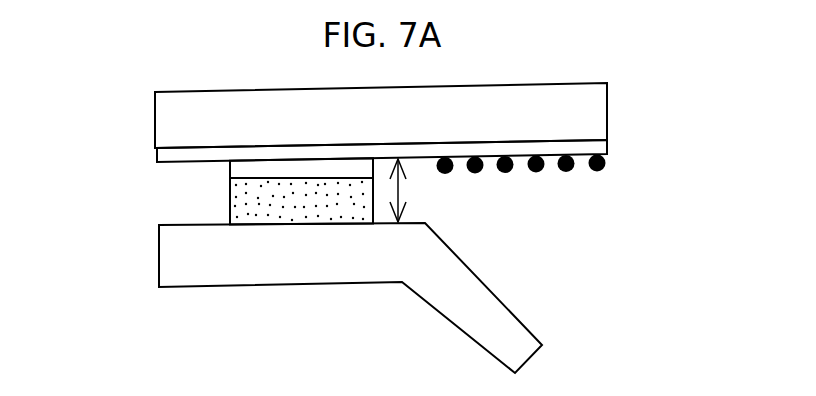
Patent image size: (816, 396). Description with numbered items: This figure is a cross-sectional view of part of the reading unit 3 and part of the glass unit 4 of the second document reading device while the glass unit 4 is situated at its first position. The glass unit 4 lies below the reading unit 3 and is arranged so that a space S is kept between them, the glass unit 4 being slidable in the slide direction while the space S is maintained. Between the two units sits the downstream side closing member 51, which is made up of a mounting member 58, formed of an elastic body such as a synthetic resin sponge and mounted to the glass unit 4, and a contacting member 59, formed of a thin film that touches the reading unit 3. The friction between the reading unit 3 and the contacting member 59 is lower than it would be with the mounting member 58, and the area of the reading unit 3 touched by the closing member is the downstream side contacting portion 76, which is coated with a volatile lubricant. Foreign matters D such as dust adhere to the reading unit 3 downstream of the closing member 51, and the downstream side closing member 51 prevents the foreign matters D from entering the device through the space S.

The reading unit 3 is at (596, 113).
The downstream side contacting portion 76 is at (595, 145).
The downstream side closing member 51 is at (209, 213).
The contacting member 59 is at (230, 172).
The mounting member 58 is at (230, 200).
The glass unit 4 is at (328, 262).
The space S is at (402, 188).
The foreign matters D is at (613, 185).